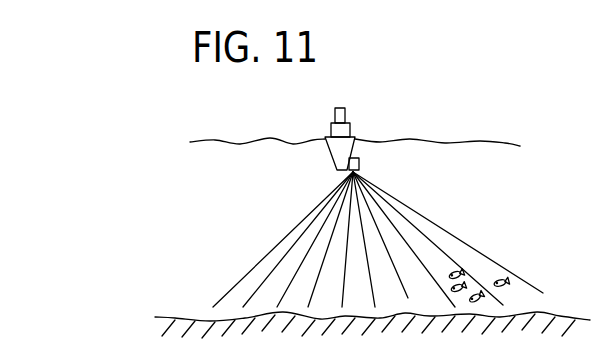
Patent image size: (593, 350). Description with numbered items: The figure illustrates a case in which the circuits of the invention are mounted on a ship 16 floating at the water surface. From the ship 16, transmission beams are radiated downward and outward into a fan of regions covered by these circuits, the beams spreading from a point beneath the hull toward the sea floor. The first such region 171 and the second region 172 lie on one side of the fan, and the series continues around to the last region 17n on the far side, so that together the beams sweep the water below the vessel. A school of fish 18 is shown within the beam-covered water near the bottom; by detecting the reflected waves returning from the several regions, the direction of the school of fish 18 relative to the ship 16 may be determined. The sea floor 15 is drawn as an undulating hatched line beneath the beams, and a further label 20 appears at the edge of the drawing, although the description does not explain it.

The ship 16 is at (353, 134).
The region 17n is at (258, 267).
The region 171 is at (430, 228).
The region 172 is at (435, 255).
The school of fish 18 is at (448, 277).
The sea bottom 15 is at (557, 314).
The display area 20 is at (584, 182).